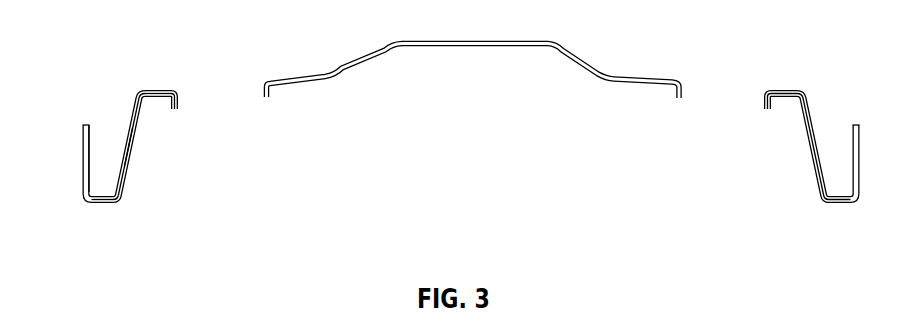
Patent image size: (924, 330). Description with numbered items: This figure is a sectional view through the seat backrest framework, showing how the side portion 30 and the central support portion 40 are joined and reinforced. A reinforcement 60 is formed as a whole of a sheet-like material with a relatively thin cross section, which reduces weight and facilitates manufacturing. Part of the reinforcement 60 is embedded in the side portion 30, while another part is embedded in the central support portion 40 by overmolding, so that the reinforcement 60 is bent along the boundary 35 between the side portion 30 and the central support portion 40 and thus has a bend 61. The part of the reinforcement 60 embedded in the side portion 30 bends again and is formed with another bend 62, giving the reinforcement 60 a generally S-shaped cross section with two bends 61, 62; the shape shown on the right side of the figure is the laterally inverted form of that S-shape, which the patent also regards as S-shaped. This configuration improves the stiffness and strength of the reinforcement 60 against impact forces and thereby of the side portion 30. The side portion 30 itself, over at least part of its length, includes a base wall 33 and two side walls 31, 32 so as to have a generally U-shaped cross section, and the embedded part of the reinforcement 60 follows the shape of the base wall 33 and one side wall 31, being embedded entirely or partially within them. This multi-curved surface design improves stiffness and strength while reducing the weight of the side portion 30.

The side portion 30 is at (105, 149).
The side wall 31 is at (132, 163).
The side wall 32 is at (83, 147).
The base wall 33 is at (102, 205).
The boundary 35 is at (148, 102).
The central support portion 40 is at (355, 70).
The reinforcement 60 is at (133, 123).
The bend 61 is at (143, 93).
The bend 62 is at (118, 202).